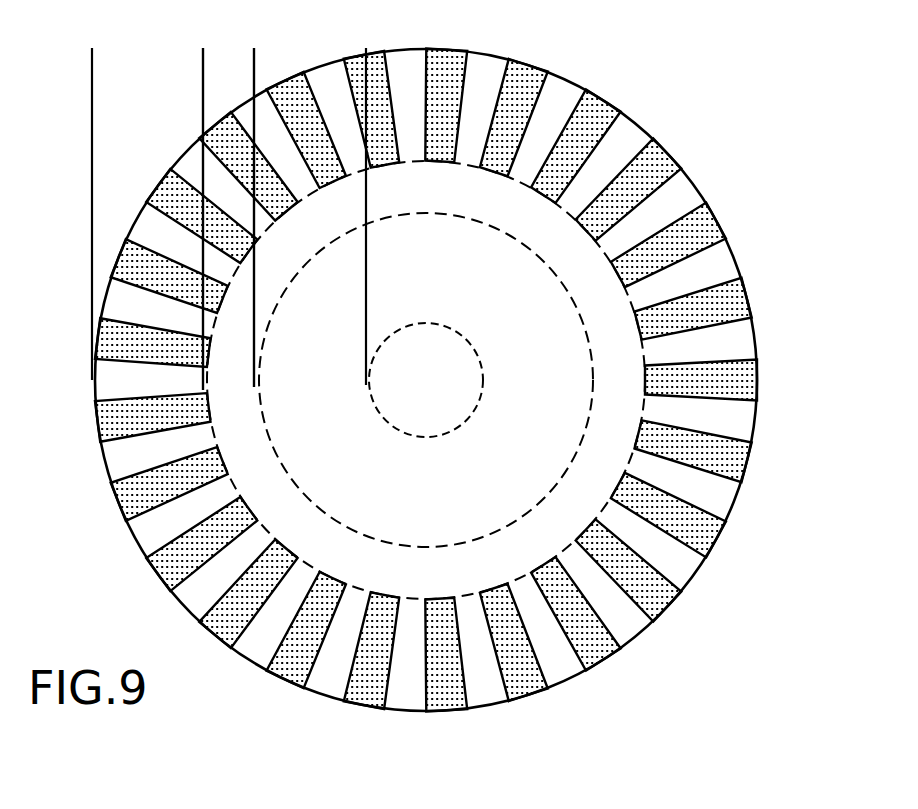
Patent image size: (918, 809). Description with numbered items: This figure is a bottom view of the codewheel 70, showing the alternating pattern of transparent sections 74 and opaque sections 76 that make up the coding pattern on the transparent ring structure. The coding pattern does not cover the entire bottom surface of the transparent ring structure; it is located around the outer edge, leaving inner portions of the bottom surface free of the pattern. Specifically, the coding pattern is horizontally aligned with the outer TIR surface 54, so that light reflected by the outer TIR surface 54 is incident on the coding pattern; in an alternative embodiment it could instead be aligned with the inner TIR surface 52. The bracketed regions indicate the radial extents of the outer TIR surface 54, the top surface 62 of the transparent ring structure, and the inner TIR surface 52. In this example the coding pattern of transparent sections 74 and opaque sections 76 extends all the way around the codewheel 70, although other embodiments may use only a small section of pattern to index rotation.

The codewheel 70 is at (756, 77).
The transparent section 74 is at (682, 193).
The opaque section 76 is at (708, 222).
The outer TIR surface 54 is at (92, 50).
The top surface 62 is at (254, 50).
The inner TIR surface 52 is at (254, 50).